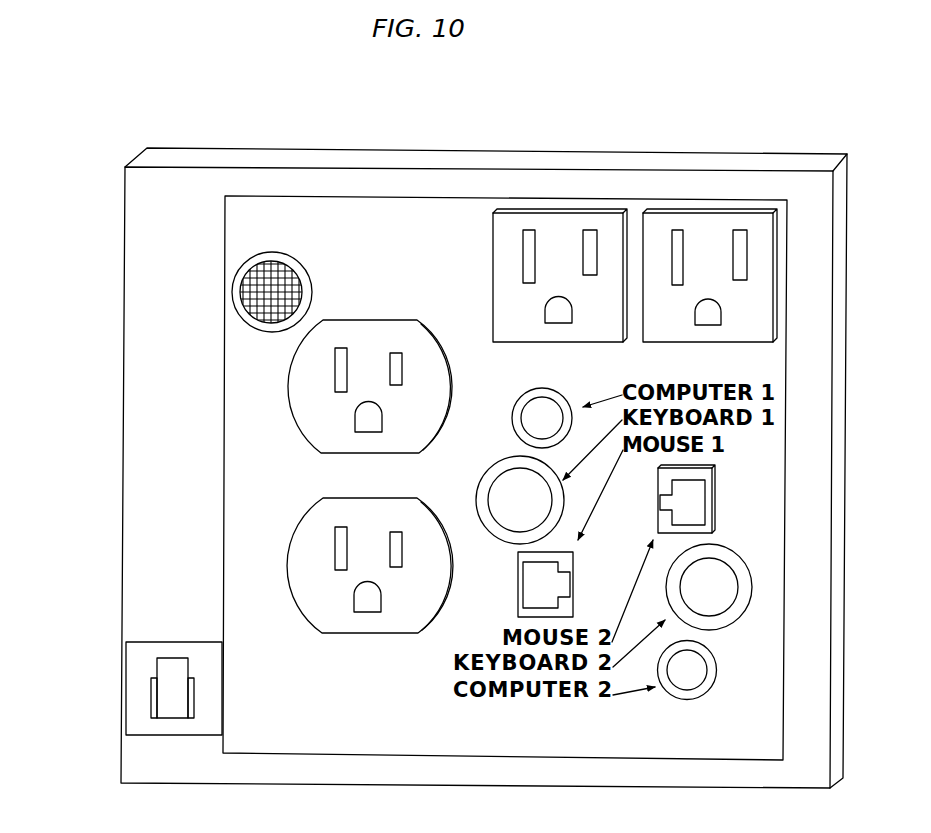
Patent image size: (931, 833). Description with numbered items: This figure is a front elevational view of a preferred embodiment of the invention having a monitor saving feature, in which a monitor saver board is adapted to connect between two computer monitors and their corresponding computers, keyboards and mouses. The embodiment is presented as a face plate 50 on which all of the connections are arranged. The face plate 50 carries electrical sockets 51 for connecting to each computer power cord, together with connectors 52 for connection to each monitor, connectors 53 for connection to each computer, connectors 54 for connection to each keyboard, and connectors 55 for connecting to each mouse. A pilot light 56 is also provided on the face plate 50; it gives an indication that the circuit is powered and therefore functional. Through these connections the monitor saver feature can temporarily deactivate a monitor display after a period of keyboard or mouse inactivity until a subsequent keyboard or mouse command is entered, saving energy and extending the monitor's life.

The face plate 50 is at (100, 433).
The electrical sockets 51 is at (312, 495).
The connectors for monitors 52 is at (665, 212).
The connectors for computers 53 is at (517, 400).
The connectors for keyboards 54 is at (483, 480).
The connectors for mouses 55 is at (655, 503).
The pilot light 56 is at (307, 228).